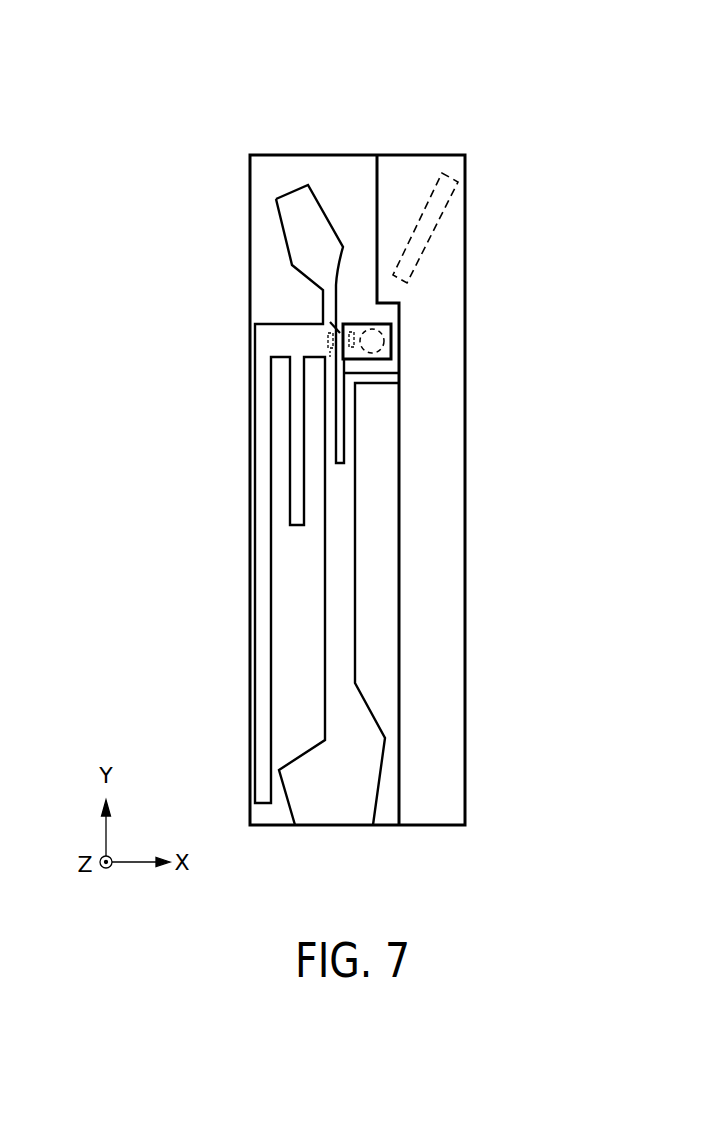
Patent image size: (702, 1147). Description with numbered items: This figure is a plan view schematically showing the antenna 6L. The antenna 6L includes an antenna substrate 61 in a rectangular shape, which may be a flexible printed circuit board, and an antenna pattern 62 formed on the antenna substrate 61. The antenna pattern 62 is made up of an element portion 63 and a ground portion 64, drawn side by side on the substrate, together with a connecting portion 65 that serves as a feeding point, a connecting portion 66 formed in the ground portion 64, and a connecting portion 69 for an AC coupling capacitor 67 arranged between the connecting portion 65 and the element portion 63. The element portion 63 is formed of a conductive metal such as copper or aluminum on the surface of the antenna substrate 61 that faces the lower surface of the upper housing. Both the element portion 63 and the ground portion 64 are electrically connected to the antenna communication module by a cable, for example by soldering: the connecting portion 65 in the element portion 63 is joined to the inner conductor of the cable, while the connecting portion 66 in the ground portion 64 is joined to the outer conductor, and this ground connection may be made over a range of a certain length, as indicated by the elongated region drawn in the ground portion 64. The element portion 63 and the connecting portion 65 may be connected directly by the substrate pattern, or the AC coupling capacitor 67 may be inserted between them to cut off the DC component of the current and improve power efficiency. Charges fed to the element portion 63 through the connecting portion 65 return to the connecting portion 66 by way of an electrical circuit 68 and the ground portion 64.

The antenna 6L is at (218, 188).
The antenna substrate 61 is at (270, 277).
The antenna pattern 62 is at (372, 92).
The element portion 63 is at (377, 148).
The ground portion 64 is at (465, 148).
The connecting portion 65 is at (392, 337).
The connecting portion 66 is at (440, 228).
The AC coupling capacitor 67 is at (330, 322).
The electrical circuit 68 is at (378, 390).
The connecting portion 69 is at (327, 340).